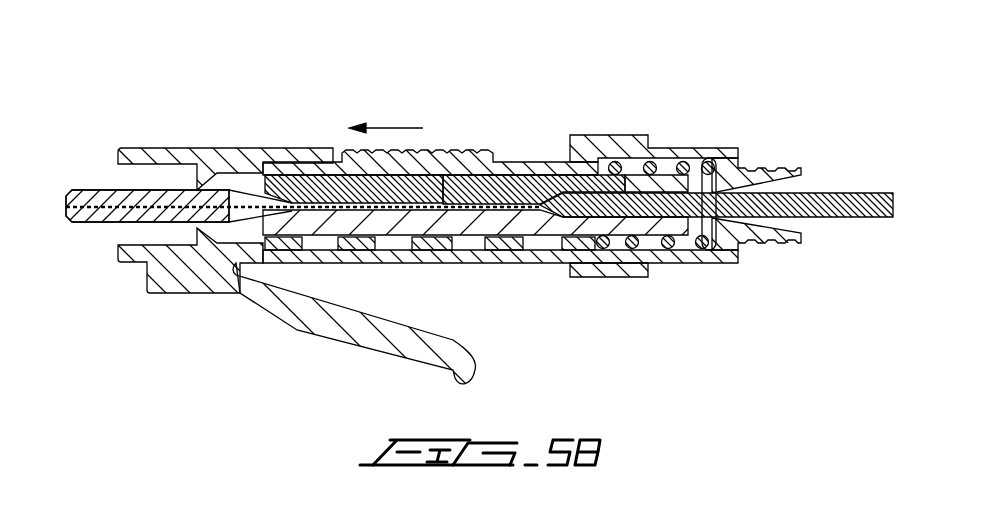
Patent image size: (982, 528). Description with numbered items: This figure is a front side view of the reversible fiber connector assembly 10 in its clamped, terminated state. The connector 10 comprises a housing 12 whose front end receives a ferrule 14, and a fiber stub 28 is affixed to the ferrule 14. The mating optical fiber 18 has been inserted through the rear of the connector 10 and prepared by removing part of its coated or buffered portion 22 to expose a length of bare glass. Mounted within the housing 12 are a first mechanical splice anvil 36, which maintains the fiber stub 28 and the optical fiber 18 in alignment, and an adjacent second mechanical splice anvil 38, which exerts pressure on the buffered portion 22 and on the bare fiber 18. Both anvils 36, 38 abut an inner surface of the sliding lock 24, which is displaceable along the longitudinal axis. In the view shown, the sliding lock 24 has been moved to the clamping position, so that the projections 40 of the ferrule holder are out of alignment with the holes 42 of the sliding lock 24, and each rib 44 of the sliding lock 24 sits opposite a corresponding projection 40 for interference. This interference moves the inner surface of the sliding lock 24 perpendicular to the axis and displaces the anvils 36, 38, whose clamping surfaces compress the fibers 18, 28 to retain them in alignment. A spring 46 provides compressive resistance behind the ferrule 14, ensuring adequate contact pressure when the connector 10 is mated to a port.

The reversible fiber connector assembly 10 is at (647, 70).
The housing 12 is at (148, 156).
The ferrule 14 is at (88, 213).
The optical fiber 18 is at (322, 207).
The buffered portion 22 is at (848, 200).
The sliding lock 24 is at (465, 165).
The fiber stub 28 is at (103, 202).
The first mechanical splice anvil 36 is at (300, 193).
The second mechanical splice anvil 38 is at (546, 183).
The projections 40 is at (360, 238).
The holes 42 is at (525, 240).
The ribs 44 is at (581, 240).
The spring 46 is at (707, 250).